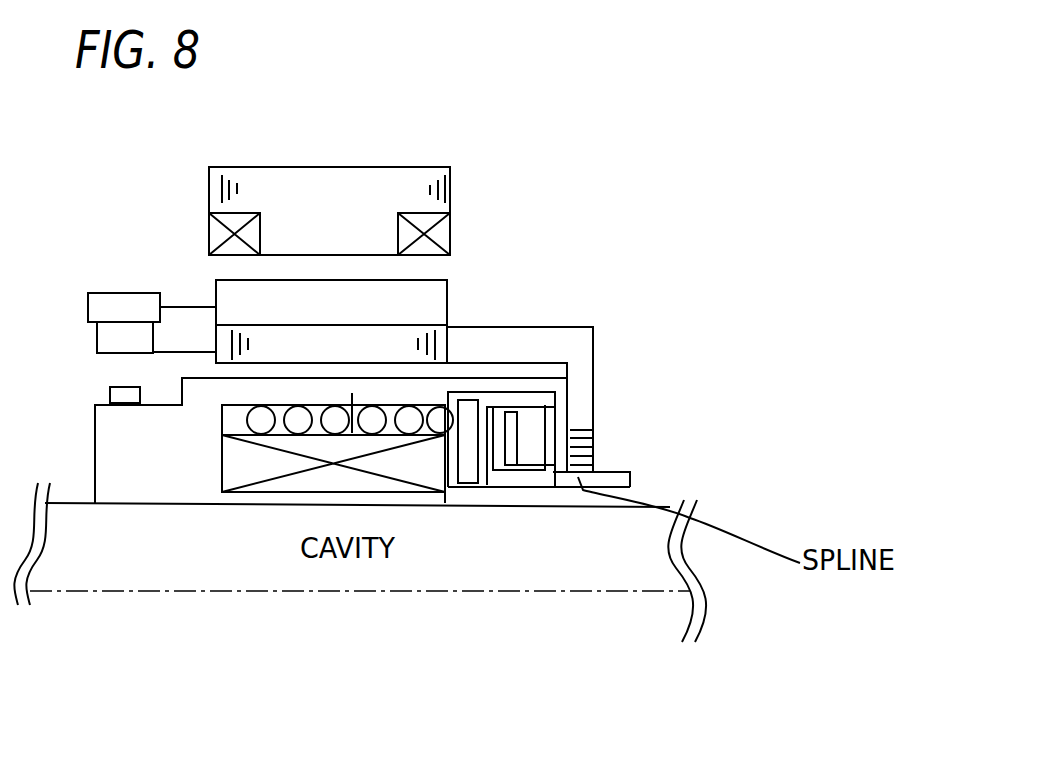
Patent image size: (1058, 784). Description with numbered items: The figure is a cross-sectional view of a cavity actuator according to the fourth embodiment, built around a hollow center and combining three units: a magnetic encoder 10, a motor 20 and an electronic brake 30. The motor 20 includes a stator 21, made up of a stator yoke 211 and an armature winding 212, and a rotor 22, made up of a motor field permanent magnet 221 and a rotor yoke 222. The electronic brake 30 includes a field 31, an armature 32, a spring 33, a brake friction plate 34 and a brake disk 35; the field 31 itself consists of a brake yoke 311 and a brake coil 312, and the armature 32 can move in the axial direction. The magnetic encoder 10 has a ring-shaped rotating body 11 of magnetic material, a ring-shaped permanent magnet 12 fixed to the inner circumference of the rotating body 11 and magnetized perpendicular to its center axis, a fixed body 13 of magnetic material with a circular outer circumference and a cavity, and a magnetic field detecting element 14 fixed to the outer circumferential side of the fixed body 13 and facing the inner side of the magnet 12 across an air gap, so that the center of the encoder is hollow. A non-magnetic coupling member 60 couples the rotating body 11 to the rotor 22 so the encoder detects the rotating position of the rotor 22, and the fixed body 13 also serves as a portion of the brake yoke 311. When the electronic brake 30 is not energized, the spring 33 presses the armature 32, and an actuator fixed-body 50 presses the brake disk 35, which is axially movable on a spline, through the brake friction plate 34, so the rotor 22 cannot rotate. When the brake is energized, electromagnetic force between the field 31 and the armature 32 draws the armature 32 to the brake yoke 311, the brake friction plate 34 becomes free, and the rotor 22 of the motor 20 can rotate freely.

The magnetic encoder 10 is at (125, 216).
The rotating body 11 is at (115, 302).
The permanent magnet 12 is at (105, 332).
The fixed body 13 is at (125, 424).
The magnetic field detecting element 14 is at (110, 390).
The non-magnetic coupling member 60 is at (192, 320).
The motor 20 is at (430, 247).
The stator 21 is at (430, 198).
The stator yoke 211 is at (400, 202).
The armature winding 212 is at (433, 235).
The rotor 22 is at (434, 297).
The motor field permanent magnet 221 is at (432, 303).
The rotor yoke 222 is at (440, 343).
The electronic brake 30 is at (612, 418).
The field 31 is at (495, 378).
The brake yoke 311 is at (520, 443).
The brake coil 312 is at (560, 455).
The armature 32 is at (460, 395).
The spring 33 is at (470, 413).
The brake friction plate 34 is at (480, 422).
The brake disk 35 is at (500, 432).
The actuator fixed-body 50 is at (532, 455).